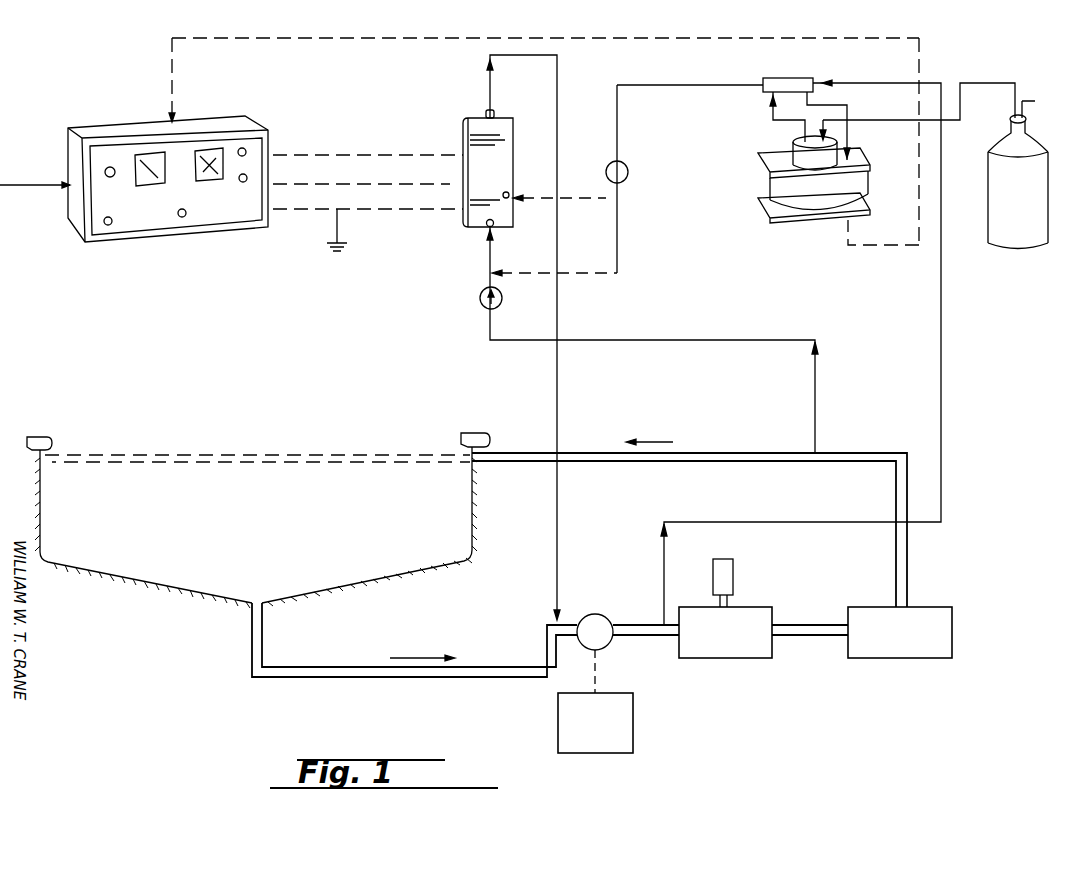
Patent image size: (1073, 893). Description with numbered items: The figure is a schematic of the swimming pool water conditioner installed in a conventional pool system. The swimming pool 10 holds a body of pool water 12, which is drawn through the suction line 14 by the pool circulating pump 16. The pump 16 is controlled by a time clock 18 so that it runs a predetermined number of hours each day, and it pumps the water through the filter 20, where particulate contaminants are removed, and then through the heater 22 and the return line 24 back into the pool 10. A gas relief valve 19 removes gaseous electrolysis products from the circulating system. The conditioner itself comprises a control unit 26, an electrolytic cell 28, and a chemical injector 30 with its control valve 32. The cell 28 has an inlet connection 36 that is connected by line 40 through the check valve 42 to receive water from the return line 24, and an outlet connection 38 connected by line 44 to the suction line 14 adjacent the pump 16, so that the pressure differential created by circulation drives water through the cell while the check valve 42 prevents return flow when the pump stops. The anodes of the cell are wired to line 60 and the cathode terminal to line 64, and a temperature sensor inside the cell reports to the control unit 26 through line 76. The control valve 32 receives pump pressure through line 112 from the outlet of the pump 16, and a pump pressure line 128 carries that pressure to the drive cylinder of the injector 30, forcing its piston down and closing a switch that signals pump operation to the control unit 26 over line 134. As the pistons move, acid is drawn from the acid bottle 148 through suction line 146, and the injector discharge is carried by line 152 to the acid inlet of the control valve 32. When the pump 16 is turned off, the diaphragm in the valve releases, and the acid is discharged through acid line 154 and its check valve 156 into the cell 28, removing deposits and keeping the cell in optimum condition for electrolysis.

The swimming pool 10 is at (42, 488).
The pool water 12 is at (345, 452).
The suction line 14 is at (330, 648).
The pool circulating pump 16 is at (608, 616).
The time clock 18 is at (633, 722).
The gas relief valve 19 is at (733, 575).
The filter 20 is at (704, 652).
The heater 22 is at (879, 652).
The return line 24 is at (584, 453).
The control unit 26 is at (118, 125).
The electrolytic cell 28 is at (467, 113).
The chemical injector 30 is at (763, 182).
The control valve 32 is at (795, 78).
The inlet connection 36 is at (486, 227).
The outlet connection 38 is at (493, 112).
The line 40 is at (640, 342).
The check valve 42 is at (482, 307).
The line 44 is at (558, 378).
The line 60 is at (357, 184).
The line 64 is at (395, 209).
The line 76 is at (313, 155).
The line 112 is at (942, 328).
The pump pressure line 128 is at (848, 112).
The line 134 is at (372, 38).
The suction line 146 is at (985, 70).
The acid bottle 148 is at (1000, 248).
The line 152 is at (773, 120).
The acid line 154 is at (619, 128).
The check valve 156 is at (626, 181).